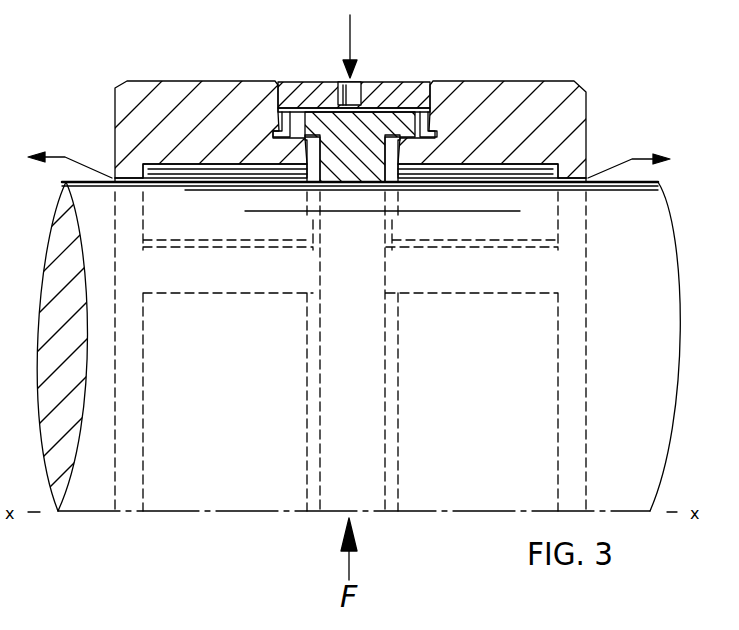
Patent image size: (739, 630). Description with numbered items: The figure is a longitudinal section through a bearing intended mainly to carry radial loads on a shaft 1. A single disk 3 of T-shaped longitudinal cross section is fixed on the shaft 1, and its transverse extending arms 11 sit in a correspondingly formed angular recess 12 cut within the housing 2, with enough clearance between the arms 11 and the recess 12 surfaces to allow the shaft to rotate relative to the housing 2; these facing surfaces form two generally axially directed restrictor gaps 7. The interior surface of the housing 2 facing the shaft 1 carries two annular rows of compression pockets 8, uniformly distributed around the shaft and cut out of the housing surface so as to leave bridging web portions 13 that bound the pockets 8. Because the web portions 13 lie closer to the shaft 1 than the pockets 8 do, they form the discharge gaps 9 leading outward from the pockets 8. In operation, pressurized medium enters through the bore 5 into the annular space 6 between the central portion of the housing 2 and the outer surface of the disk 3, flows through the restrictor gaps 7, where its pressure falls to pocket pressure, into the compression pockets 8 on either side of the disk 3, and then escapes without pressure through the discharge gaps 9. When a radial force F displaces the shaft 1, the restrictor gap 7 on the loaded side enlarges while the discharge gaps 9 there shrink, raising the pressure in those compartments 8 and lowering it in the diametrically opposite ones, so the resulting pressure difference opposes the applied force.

The shaft 1 is at (97, 411).
The housing 2 is at (495, 98).
The disk 3 is at (388, 120).
The bore 5 is at (358, 100).
The annular space 6 is at (370, 108).
The restrictor gaps 7 is at (300, 133).
The compression pockets 8 is at (165, 176).
The discharge gaps 9 is at (116, 177).
The transverse extending arms 11 is at (291, 115).
The angular recess 12 is at (281, 118).
The web portions 13 is at (130, 171).